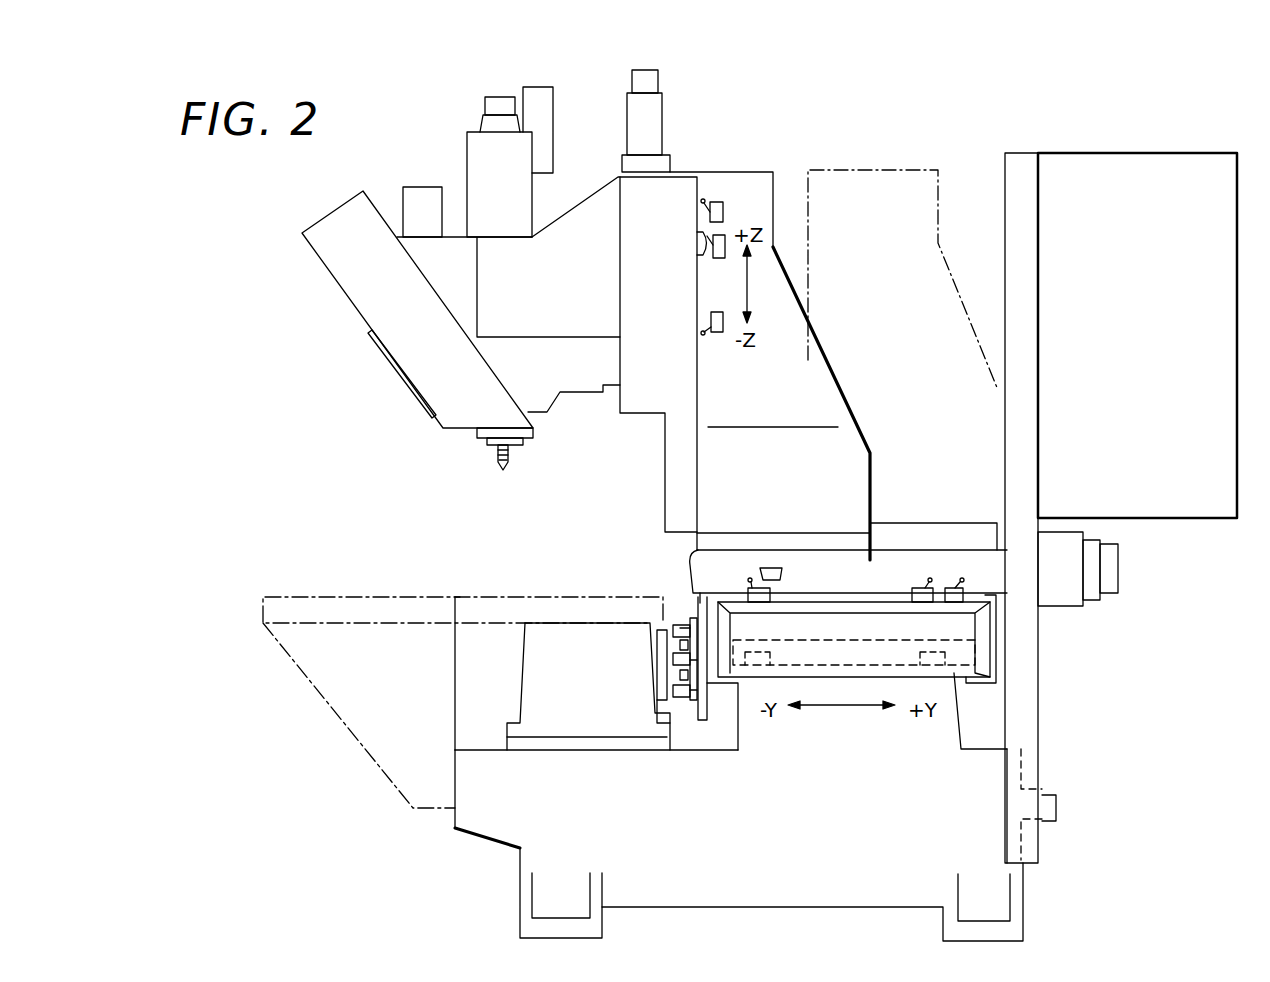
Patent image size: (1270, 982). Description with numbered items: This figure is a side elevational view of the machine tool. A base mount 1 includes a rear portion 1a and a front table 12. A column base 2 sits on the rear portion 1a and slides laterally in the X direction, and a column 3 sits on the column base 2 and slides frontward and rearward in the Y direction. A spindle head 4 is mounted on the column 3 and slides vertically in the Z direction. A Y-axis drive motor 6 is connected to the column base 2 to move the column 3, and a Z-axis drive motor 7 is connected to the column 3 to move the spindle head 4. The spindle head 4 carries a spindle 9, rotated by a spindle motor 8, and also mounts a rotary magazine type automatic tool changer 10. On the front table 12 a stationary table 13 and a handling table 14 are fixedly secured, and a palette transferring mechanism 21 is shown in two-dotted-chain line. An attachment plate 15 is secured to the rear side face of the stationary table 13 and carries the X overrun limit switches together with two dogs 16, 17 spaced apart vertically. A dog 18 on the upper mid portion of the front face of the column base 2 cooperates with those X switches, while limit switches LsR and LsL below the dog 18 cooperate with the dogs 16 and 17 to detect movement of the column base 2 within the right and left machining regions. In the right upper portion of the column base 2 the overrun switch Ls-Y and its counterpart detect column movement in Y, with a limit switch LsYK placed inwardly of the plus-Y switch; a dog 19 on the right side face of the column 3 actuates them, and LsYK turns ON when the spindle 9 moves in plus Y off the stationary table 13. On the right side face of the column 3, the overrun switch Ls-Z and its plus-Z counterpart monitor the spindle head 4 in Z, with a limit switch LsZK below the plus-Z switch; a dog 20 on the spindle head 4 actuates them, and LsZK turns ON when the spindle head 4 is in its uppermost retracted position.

The base mount 1 is at (750, 900).
The rear portion 1a is at (952, 726).
The column base 2 is at (963, 623).
The column 3 is at (873, 560).
The spindle head 4 is at (590, 213).
The Y-axis drive motor 6 is at (1072, 574).
The Z-axis drive motor 7 is at (655, 112).
The spindle motor 8 is at (467, 150).
The spindle 9 is at (487, 445).
The rotary magazine type automatic tool changer 10 is at (333, 267).
The front table 12 is at (473, 827).
The stationary table 13 is at (560, 720).
The handling table 14 is at (315, 618).
The attachment plate 15 is at (673, 707).
The dog 16 is at (672, 660).
The dog 17 is at (660, 687).
The dog 18 is at (700, 630).
The dog 19 is at (767, 570).
The dog 20 is at (697, 242).
The palette transferring mechanism 21 is at (462, 594).
The overrun limit switch Ls-Z is at (716, 332).
The limit switch LsZK is at (727, 223).
The overrun limit switch Ls-Y is at (747, 597).
The limit switch LsYK is at (907, 597).
The limit switch LsL is at (690, 690).
The limit switch LsR is at (697, 665).